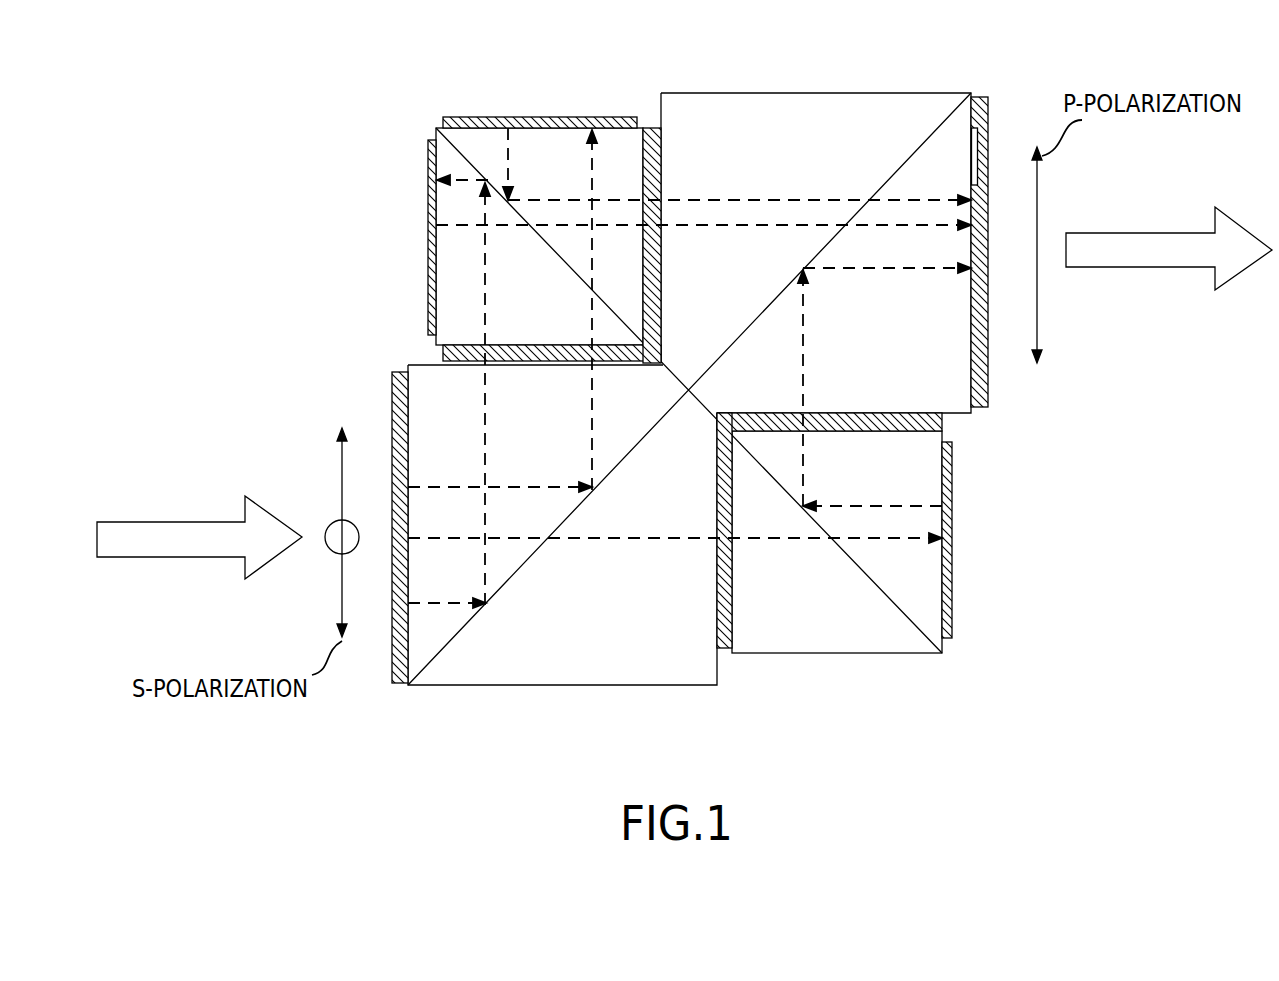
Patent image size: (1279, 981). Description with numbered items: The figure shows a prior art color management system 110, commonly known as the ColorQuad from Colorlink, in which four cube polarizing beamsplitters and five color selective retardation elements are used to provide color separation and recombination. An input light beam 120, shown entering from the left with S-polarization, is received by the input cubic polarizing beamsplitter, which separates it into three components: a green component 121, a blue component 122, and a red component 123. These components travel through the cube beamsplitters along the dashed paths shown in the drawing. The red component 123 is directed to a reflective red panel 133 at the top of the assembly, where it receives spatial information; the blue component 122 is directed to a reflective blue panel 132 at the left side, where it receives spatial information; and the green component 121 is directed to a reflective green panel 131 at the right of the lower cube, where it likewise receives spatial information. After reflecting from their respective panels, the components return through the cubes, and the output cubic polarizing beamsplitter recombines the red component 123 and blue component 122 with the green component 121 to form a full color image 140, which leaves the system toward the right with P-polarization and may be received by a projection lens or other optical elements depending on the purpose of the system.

The color management system 110 is at (847, 115).
The input light beam 120 is at (193, 520).
The green component 121 is at (878, 270).
The blue component 122 is at (486, 307).
The red component 123 is at (532, 200).
The reflective green panel 131 is at (1042, 543).
The reflective blue panel 132 is at (343, 230).
The reflective red panel 133 is at (573, 67).
The full color image 140 is at (1125, 232).